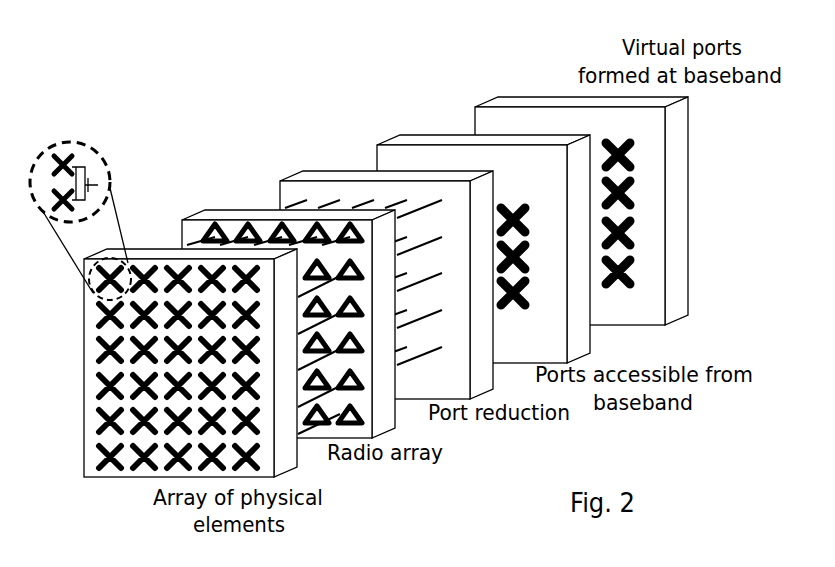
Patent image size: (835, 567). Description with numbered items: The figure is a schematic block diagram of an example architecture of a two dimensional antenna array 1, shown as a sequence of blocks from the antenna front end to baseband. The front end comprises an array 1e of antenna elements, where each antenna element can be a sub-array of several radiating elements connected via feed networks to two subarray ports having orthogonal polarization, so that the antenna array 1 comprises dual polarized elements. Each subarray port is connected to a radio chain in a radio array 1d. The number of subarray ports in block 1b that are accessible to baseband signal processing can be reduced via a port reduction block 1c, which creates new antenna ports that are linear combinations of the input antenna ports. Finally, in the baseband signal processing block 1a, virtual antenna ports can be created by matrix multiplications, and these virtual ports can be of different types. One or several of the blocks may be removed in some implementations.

The two dimensional antenna array 1 is at (366, 250).
The baseband signal processing block 1a is at (577, 106).
The block of subarray ports accessible to baseband 1b is at (417, 145).
The port reduction block 1c is at (332, 180).
The radio array 1d is at (253, 220).
The array of antenna elements 1e is at (180, 258).